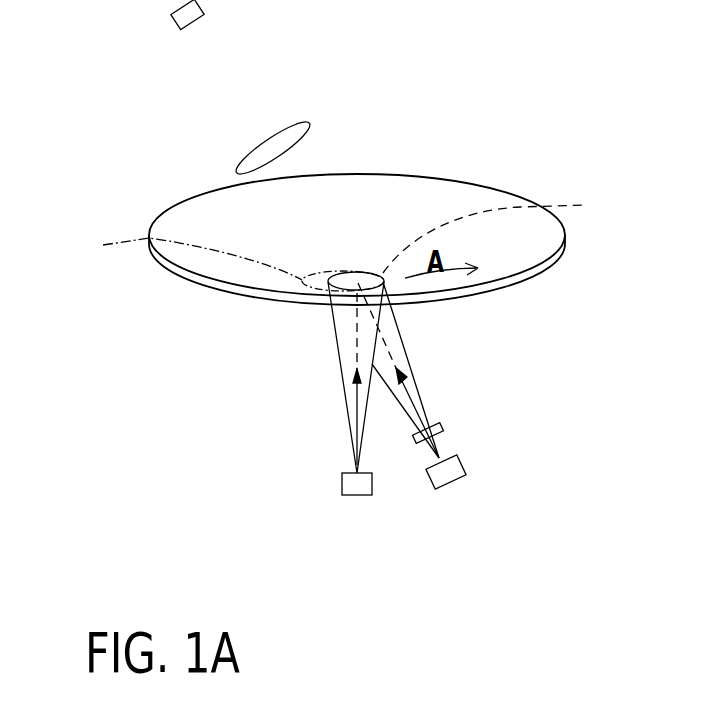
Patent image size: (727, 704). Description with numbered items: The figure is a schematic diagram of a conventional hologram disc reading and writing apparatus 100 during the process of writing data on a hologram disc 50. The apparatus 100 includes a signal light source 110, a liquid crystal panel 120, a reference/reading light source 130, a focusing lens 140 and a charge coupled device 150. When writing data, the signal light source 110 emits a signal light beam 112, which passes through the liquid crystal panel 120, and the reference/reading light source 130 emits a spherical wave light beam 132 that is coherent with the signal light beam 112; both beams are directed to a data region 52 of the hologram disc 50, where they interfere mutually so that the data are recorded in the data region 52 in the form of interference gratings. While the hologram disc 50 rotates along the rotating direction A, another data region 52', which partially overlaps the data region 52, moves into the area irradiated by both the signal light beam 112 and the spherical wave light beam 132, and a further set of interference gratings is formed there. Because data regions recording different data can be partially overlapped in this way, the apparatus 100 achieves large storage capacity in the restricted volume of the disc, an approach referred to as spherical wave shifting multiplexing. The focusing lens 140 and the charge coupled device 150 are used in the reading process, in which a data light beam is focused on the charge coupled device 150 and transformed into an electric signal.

The hologram disc reading and writing apparatus 100 is at (618, 523).
The signal light source 110 is at (460, 463).
The signal light beam 112 is at (400, 345).
The liquid crystal panel 120 is at (443, 422).
The reference/reading light source 130 is at (342, 483).
The spherical wave light beam 132 is at (347, 378).
The focusing lens 140 is at (243, 172).
The charge coupled device (CCD) 150 is at (173, 21).
The hologram disc 50 is at (430, 193).
The data region 52 is at (503, 231).
The data region 52' is at (223, 259).